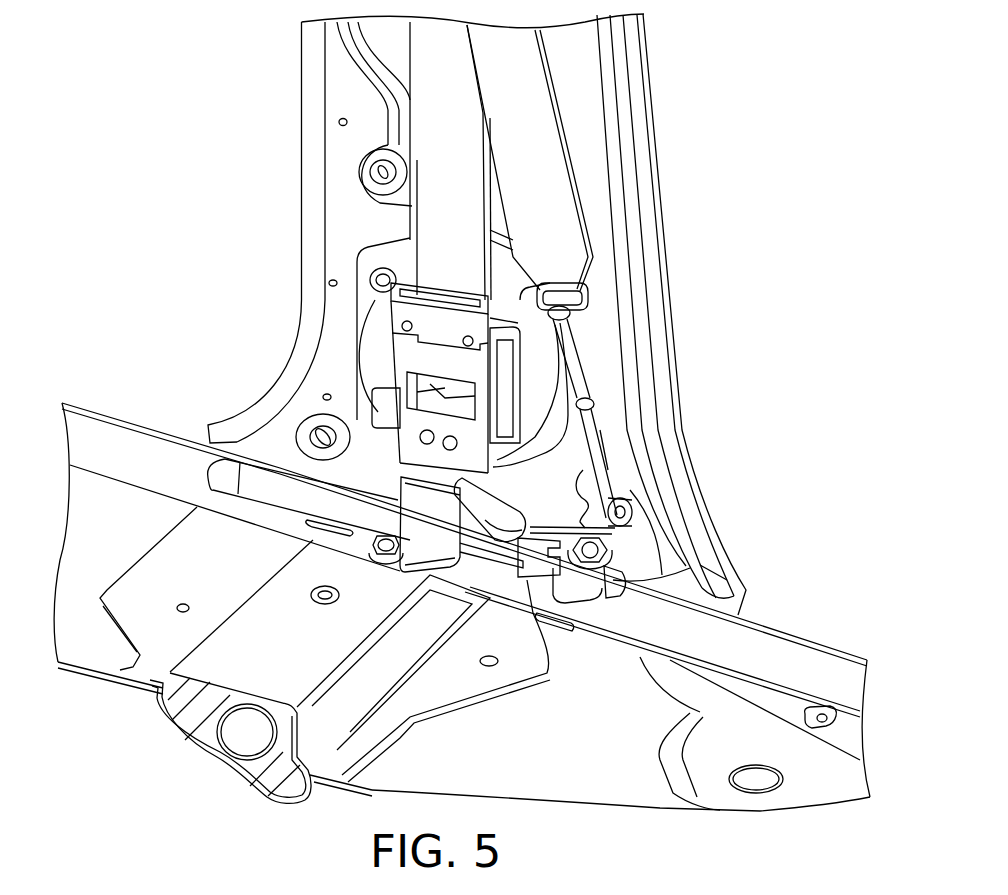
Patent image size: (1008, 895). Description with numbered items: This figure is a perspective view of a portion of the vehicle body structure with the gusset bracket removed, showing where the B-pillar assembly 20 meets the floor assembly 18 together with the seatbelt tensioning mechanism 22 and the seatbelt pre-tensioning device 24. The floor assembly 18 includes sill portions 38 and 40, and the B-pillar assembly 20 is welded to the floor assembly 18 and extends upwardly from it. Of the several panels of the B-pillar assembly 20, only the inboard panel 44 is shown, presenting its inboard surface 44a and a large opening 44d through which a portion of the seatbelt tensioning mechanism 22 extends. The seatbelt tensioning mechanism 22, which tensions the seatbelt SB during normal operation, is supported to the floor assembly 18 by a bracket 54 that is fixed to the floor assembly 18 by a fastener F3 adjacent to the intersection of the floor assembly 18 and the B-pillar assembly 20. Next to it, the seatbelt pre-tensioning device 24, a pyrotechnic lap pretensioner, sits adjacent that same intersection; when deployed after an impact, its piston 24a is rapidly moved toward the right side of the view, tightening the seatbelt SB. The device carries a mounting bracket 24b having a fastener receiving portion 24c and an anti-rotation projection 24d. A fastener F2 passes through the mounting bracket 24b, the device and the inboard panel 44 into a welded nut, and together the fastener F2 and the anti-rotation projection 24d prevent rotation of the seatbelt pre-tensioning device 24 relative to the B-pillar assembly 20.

The inboard panel 44 is at (578, 78).
The seatbelt SB is at (528, 137).
The B-pillar assembly 20 is at (670, 196).
The large opening 44d is at (400, 206).
The inboard surface 44a is at (595, 223).
The seatbelt tensioning mechanism 22 is at (548, 352).
The sill portion 38 is at (129, 427).
The bracket 54 is at (423, 517).
The fastener F3 is at (384, 547).
The seatbelt pre-tensioning device 24 is at (520, 524).
The piston 24a is at (532, 557).
The mounting bracket 24b is at (610, 570).
The fastener receiving portion 24c is at (617, 513).
The anti-rotation projection 24d is at (613, 577).
The fastener F2 is at (574, 562).
The sill portion 40 is at (819, 638).
The floor assembly 18 is at (268, 623).